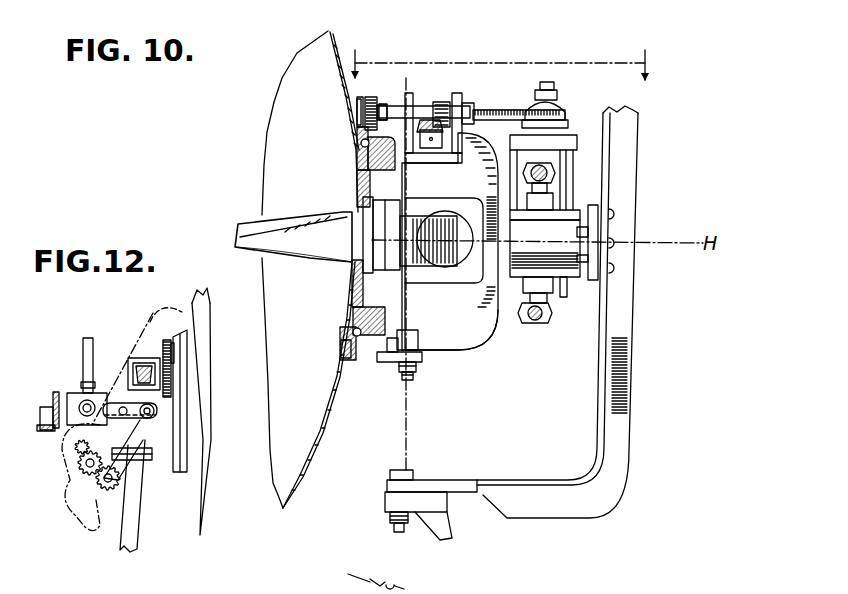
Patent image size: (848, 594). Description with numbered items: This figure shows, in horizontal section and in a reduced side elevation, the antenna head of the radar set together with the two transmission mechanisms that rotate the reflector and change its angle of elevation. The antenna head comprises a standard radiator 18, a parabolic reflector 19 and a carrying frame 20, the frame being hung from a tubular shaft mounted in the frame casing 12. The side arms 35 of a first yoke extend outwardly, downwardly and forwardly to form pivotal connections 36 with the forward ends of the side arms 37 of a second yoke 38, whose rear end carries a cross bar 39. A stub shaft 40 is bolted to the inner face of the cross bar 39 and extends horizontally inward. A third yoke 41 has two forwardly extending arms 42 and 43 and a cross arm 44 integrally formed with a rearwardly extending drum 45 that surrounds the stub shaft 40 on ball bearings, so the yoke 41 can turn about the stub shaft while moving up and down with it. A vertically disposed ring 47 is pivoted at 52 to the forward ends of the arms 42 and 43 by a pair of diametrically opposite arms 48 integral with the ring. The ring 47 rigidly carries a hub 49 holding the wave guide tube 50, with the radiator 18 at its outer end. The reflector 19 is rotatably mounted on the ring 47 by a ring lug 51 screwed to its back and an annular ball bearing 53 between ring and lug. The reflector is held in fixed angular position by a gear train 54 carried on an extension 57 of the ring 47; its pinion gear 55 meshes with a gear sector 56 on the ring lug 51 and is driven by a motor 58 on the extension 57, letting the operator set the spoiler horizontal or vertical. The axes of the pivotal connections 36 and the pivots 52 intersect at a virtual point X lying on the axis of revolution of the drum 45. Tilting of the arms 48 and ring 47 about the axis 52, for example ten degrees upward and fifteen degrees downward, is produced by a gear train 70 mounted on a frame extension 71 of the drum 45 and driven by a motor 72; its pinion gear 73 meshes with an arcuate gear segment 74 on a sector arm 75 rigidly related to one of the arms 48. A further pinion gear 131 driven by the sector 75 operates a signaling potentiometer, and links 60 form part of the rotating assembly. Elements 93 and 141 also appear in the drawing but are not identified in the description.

In FIG. 10, the frame casing 12 is at (507, 54).
In FIG. 10, the standard radiator 18 is at (247, 222).
In FIG. 10, the parabolic reflector 19 is at (321, 440).
In FIG. 12, the parabolic reflector 19 is at (193, 300).
In FIG. 10, the carrying frame 20 is at (698, 137).
In FIG. 10, the side arms 35 is at (448, 540).
In FIG. 10, the pivotal connections 36 is at (394, 528).
In FIG. 10, the side arms 37 is at (453, 480).
In FIG. 10, the second yoke 38 is at (540, 312).
In FIG. 10, the cross bar 39 is at (630, 436).
In FIG. 12, the cross bar 39 is at (52, 431).
In FIG. 10, the stub shaft 40 is at (587, 237).
In FIG. 12, the stub shaft 40 is at (53, 407).
In FIG. 10, the third yoke 41 is at (506, 355).
In FIG. 10, the forwardly extending arm 42 is at (447, 351).
In FIG. 10, the forwardly extending arm 43 is at (478, 104).
In FIG. 10, the cross arm 44 is at (502, 190).
In FIG. 10, the drum 45 is at (580, 262).
In FIG. 12, the drum 45 is at (74, 393).
In FIG. 10, the ring 47 is at (357, 192).
In FIG. 12, the ring 47 is at (174, 458).
In FIG. 10, the arms 48 is at (398, 108).
In FIG. 12, the arms 48 is at (113, 369).
In FIG. 10, the hub 49 is at (362, 248).
In FIG. 10, the wave guide tube 50 is at (312, 252).
In FIG. 10, the ring lug 51 is at (357, 131).
In FIG. 10, the pivot 52 is at (408, 381).
In FIG. 12, the pivot 52 is at (153, 413).
In FIG. 10, the annular ball bearing 53 is at (361, 146).
In FIG. 10, the gear train 54 is at (385, 96).
In FIG. 12, the gear train 54 is at (161, 333).
In FIG. 10, the pinion gear 55 is at (365, 108).
In FIG. 12, the pinion gear 55 is at (171, 378).
In FIG. 10, the gear sector 56 is at (365, 127).
In FIG. 12, the gear sector 56 is at (176, 349).
In FIG. 10, the extension 57 is at (457, 95).
In FIG. 12, the extension 57 is at (136, 360).
In FIG. 10, the motor 58 is at (443, 293).
In FIG. 10, the links 60 is at (556, 170).
In FIG. 12, the links 60 is at (88, 342).
In FIG. 10, the gear train 70 is at (585, 110).
In FIG. 12, the gear train 70 is at (55, 508).
In FIG. 10, the frame extension 71 is at (580, 147).
In FIG. 12, the frame extension 71 is at (112, 398).
In FIG. 10, the motor 72 is at (573, 194).
In FIG. 10, the pinion gear 73 is at (562, 105).
In FIG. 12, the pinion gear 73 is at (78, 465).
In FIG. 10, the arcuate gear segment 74 is at (503, 108).
In FIG. 12, the arcuate gear segment 74 is at (115, 480).
In FIG. 12, the sector arm 75 is at (143, 480).
In FIG. 10, the fitting 93 is at (418, 592).
In FIG. 12, the pinion gear 131 is at (83, 522).
In FIG. 10, the fitting 141 is at (500, 593).
In FIG. 10, the virtual point X is at (410, 238).